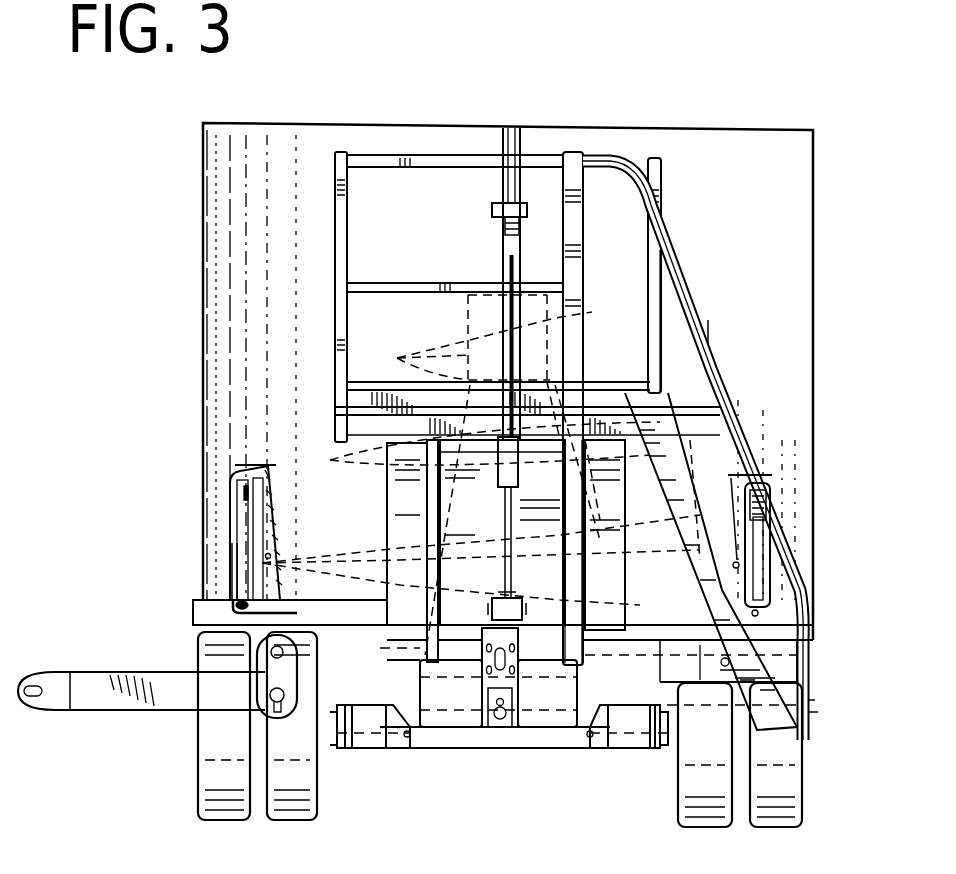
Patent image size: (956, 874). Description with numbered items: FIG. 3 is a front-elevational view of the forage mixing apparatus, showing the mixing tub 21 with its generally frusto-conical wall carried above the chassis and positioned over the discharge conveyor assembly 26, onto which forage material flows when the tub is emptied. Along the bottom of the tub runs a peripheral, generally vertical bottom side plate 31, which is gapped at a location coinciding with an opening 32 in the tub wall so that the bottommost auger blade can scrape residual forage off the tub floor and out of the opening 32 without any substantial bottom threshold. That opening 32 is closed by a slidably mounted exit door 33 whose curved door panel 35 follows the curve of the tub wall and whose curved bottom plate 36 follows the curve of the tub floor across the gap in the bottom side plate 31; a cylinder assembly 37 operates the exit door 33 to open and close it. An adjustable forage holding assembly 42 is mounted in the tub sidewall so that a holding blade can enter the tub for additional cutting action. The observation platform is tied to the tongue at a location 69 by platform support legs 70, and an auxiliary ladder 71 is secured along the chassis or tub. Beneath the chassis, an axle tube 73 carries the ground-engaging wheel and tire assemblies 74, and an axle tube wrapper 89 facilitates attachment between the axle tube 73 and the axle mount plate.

The mixing tub 21 is at (812, 380).
The discharge conveyor assembly 26 is at (184, 711).
The bottom side plate 31 is at (198, 612).
The opening 32 is at (390, 534).
The exit door 33 is at (400, 500).
The curved door panel 35 is at (552, 495).
The curved bottom plate 36 is at (463, 608).
The cylinder assembly 37 is at (505, 243).
The adjustable forage holding assembly 42 is at (740, 558).
The location 69 is at (572, 678).
The platform support legs 70 is at (432, 645).
The auxiliary ladder 71 is at (685, 490).
The axle tube 73 is at (530, 748).
The wheel and tire assemblies 74 is at (788, 802).
The axle tube wrapper 89 is at (367, 740).